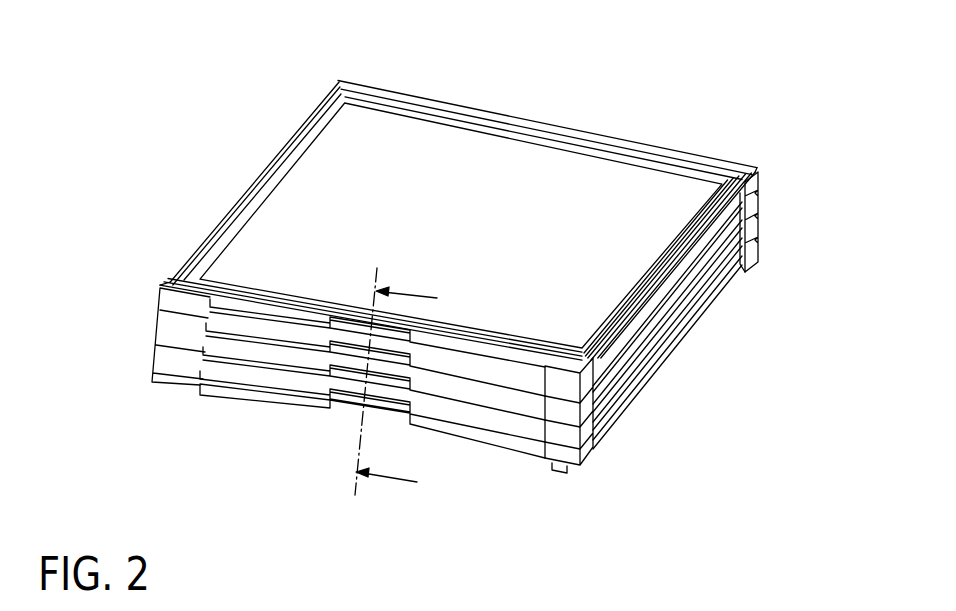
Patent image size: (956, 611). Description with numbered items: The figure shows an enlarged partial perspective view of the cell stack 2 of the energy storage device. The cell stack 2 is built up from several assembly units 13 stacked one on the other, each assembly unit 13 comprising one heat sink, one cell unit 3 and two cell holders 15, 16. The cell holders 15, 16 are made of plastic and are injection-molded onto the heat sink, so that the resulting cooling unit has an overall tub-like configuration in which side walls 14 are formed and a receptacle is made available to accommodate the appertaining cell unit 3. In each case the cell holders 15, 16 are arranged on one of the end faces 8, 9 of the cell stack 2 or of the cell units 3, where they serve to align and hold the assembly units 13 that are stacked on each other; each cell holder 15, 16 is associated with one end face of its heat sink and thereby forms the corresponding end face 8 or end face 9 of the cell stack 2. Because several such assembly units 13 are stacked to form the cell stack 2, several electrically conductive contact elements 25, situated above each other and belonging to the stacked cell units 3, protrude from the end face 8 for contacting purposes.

The cell stack 2 is at (205, 118).
The cell unit 3 is at (688, 183).
The end face 8 is at (217, 432).
The end face 9 is at (450, 92).
The assembly unit 13 is at (752, 253).
The side wall 14 is at (739, 200).
The cell holder 15 is at (600, 139).
The cell holder 16 is at (557, 382).
The contact element 25 is at (216, 386).